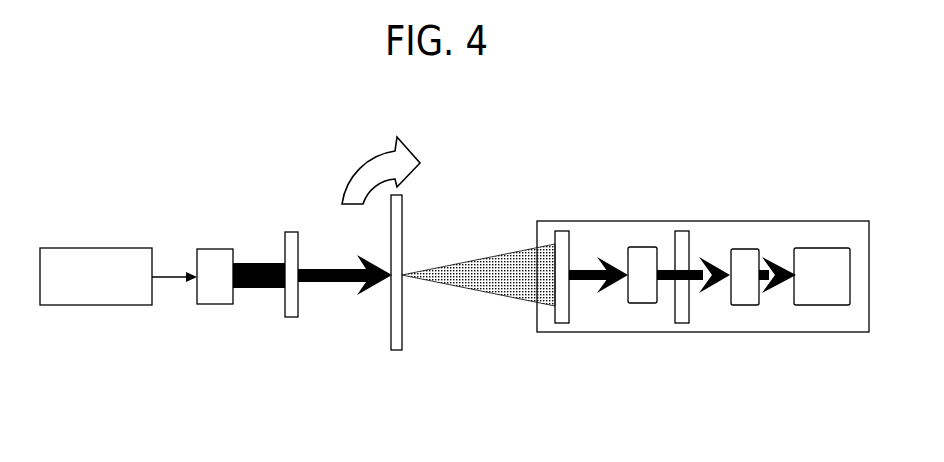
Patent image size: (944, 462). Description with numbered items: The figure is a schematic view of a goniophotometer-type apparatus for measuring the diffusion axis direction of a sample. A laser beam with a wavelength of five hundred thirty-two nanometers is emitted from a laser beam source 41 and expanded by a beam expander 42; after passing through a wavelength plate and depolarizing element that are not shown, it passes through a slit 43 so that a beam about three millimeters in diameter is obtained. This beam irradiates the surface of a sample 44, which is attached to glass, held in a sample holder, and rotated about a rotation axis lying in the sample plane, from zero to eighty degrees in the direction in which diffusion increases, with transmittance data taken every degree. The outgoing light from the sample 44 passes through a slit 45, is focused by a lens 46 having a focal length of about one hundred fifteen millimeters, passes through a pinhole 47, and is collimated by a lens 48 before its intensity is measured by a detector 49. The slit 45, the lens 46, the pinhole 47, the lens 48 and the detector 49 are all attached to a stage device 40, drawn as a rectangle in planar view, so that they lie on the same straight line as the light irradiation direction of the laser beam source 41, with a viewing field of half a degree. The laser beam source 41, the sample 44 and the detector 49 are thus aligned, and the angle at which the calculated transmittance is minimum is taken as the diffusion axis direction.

The stage device 40 is at (605, 318).
The laser beam source 41 is at (90, 265).
The beam expander 42 is at (210, 262).
The slit 43 is at (288, 243).
The sample 44 is at (398, 350).
The slit 45 is at (558, 238).
The lens 46 is at (640, 258).
The pinhole 47 is at (678, 240).
The lens 48 is at (745, 259).
The detector 49 is at (821, 262).